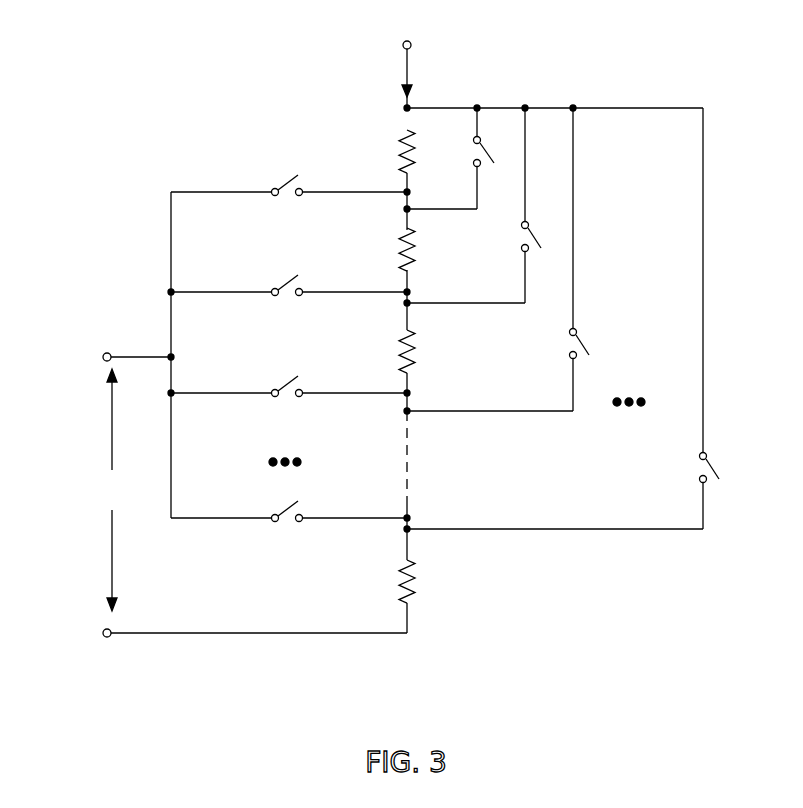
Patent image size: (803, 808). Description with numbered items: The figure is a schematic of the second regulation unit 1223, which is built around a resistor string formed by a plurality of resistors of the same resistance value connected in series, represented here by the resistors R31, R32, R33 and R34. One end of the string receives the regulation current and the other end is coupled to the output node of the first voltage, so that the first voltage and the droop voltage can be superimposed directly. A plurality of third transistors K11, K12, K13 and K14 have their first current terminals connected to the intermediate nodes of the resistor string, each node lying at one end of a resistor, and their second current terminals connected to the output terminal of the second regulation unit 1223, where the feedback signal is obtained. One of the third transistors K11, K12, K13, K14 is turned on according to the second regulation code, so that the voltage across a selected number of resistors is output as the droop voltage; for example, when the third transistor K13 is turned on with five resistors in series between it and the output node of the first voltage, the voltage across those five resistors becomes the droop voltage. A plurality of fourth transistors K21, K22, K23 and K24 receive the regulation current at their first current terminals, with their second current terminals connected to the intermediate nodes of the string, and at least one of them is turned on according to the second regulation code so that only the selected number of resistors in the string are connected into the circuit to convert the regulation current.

The second regulation unit 1223 is at (122, 47).
The resistor R31 is at (386, 151).
The resistor R32 is at (386, 249).
The resistor R33 is at (386, 351).
The resistor R34 is at (385, 581).
The third transistor K11 is at (289, 199).
The third transistor K12 is at (289, 299).
The third transistor K13 is at (289, 400).
The third transistor K14 is at (289, 525).
The fourth transistor K21 is at (450, 158).
The fourth transistor K22 is at (474, 205).
The fourth transistor K23 is at (498, 259).
The fourth transistor K24 is at (563, 318).